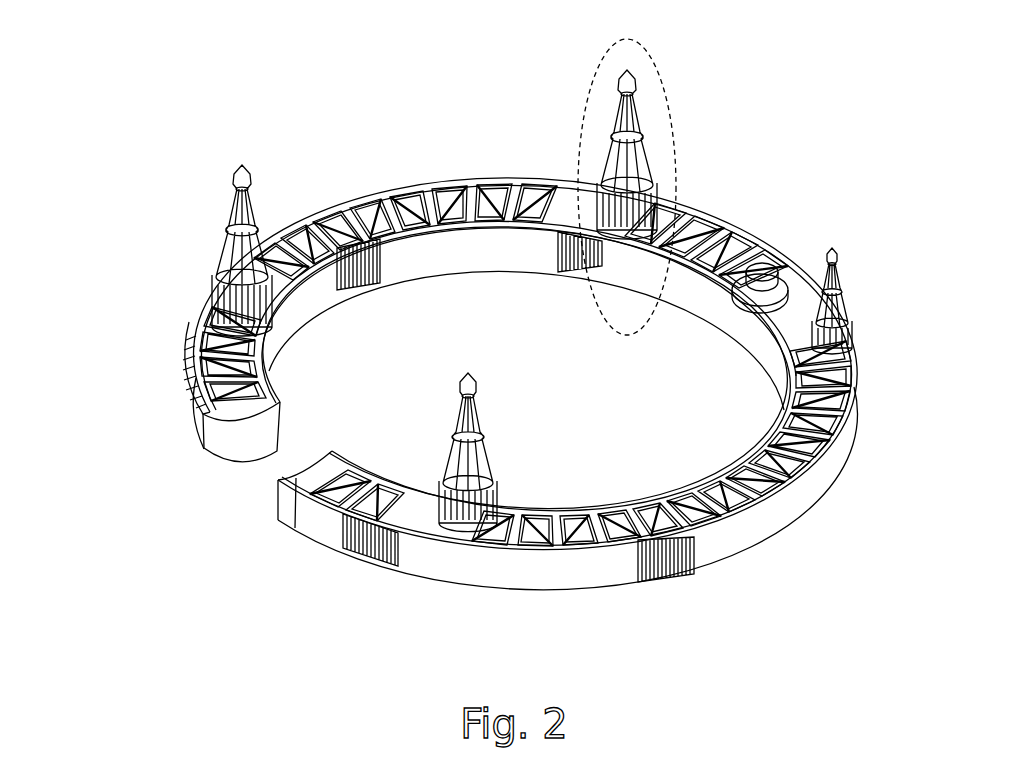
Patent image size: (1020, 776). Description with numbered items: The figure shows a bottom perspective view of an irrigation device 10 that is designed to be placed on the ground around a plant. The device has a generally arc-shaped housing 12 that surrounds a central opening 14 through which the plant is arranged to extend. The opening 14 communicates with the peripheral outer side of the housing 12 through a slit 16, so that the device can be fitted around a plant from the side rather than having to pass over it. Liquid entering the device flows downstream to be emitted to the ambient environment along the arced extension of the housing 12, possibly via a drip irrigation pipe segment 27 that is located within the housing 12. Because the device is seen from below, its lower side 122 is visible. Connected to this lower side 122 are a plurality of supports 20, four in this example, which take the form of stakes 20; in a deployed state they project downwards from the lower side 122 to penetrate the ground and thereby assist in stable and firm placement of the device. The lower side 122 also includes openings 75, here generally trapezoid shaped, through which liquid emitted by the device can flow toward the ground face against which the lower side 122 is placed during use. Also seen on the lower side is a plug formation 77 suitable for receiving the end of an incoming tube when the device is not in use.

The irrigation device 10 is at (135, 242).
The housing 12 is at (804, 506).
The opening 14 is at (549, 390).
The slit 16 is at (258, 512).
The supports 20 is at (265, 140).
The drip irrigation pipe segment 27 is at (717, 510).
The openings 75 is at (472, 188).
The plug formation 77 is at (771, 250).
The lower side 122 is at (457, 177).